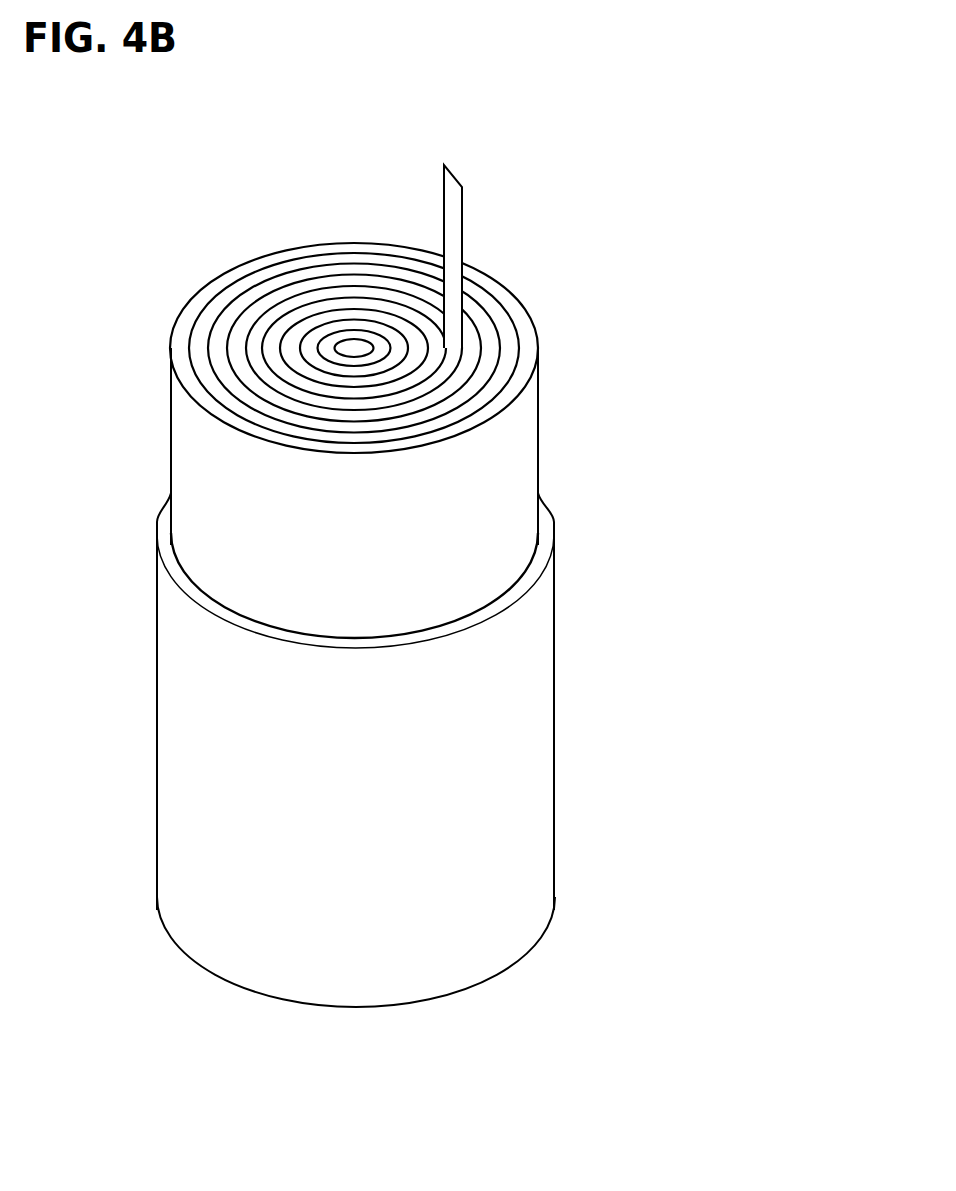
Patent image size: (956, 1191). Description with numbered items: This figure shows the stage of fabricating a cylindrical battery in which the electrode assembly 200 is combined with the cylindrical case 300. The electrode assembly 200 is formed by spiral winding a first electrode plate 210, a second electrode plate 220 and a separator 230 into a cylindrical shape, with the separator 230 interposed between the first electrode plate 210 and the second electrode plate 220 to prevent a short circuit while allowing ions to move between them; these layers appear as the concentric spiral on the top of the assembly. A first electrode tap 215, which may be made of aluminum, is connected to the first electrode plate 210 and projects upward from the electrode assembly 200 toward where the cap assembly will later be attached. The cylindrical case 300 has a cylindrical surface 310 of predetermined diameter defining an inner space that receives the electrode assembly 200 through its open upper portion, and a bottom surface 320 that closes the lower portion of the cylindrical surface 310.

The electrode assembly 200 is at (495, 355).
The first electrode plate 210 is at (488, 327).
The first electrode tap 215 is at (452, 207).
The second electrode plate 220 is at (506, 348).
The separator 230 is at (520, 383).
The cylindrical case 300 is at (476, 753).
The cylindrical surface 310 is at (533, 629).
The bottom surface 320 is at (455, 995).